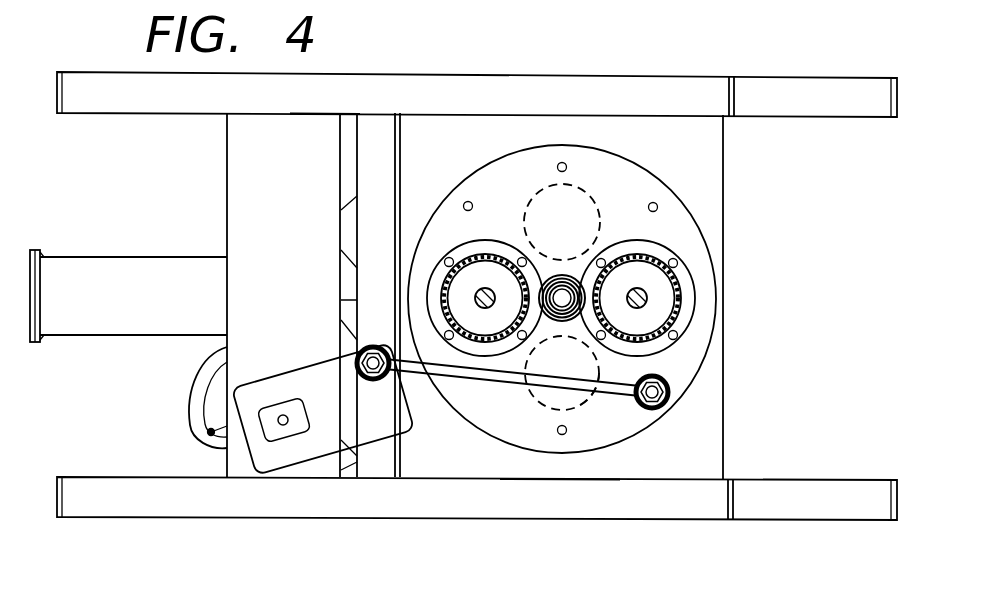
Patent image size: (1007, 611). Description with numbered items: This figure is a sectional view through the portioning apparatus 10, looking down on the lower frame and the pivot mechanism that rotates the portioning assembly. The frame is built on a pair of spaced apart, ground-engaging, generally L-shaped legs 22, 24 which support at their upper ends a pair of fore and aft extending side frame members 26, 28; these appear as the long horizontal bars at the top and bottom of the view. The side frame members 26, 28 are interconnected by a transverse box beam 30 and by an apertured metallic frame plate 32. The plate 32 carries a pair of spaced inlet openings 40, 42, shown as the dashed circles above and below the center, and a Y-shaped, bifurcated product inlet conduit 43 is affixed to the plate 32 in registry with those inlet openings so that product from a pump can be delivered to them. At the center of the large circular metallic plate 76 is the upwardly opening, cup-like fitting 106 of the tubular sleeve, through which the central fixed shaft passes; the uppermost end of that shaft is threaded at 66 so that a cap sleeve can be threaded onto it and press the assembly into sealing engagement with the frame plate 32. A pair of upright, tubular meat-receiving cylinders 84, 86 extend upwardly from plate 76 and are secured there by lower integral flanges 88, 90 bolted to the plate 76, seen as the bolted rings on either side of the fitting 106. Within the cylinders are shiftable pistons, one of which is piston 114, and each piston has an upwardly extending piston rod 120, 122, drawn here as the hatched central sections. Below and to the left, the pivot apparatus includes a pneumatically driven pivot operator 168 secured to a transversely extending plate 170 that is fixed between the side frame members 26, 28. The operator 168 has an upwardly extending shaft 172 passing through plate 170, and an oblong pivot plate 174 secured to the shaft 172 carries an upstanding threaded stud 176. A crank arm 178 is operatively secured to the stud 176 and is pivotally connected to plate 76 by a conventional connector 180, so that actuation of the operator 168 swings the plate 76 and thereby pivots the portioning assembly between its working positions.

The apparatus 10 is at (588, 58).
The ground-engaging leg 22 is at (783, 498).
The ground-engaging leg 24 is at (774, 104).
The side frame member 26 is at (555, 502).
The side frame member 28 is at (323, 96).
The transverse box beam 30 is at (373, 137).
The frame plate 32 is at (707, 433).
The inlet opening 40 is at (545, 185).
The inlet opening 42 is at (578, 410).
The product inlet conduit 43 is at (68, 270).
The threaded end of shaft 66 is at (558, 322).
The metallic plate 76 is at (673, 223).
The meat-receiving cylinder 84 is at (448, 275).
The meat-receiving cylinder 86 is at (692, 312).
The lower integral flange 88 is at (488, 245).
The lower integral flange 90 is at (663, 257).
The cup-like fitting 106 is at (550, 262).
The piston 114 is at (632, 275).
The piston rod 120 is at (477, 293).
The piston rod 122 is at (645, 300).
The pivot operator 168 is at (198, 420).
The transversely extending plate 170 is at (258, 183).
The shaft 172 is at (285, 426).
The pivot plate 174 is at (258, 462).
The threaded stud 176 is at (355, 370).
The crank arm 178 is at (488, 375).
The connector 180 is at (670, 401).